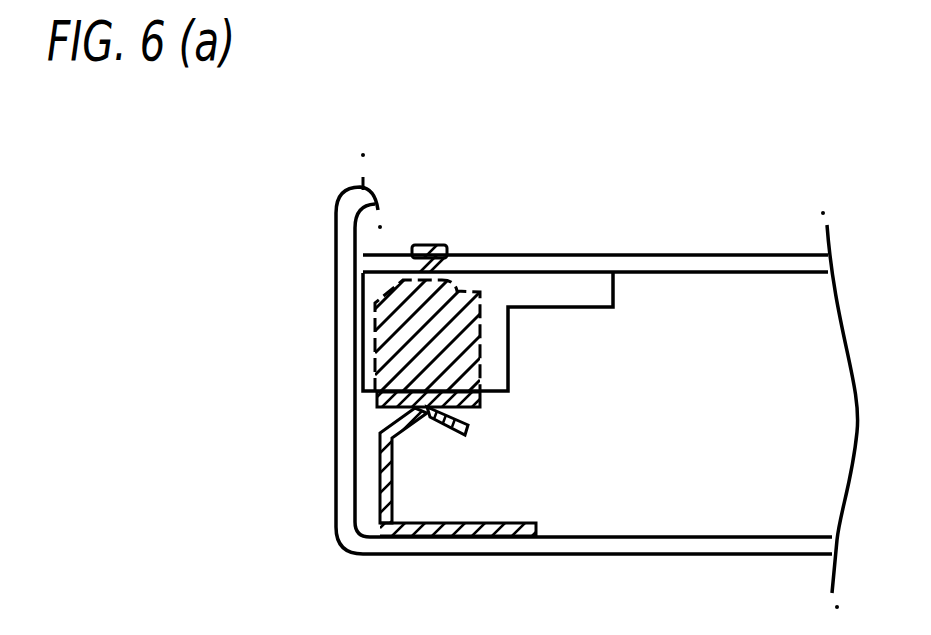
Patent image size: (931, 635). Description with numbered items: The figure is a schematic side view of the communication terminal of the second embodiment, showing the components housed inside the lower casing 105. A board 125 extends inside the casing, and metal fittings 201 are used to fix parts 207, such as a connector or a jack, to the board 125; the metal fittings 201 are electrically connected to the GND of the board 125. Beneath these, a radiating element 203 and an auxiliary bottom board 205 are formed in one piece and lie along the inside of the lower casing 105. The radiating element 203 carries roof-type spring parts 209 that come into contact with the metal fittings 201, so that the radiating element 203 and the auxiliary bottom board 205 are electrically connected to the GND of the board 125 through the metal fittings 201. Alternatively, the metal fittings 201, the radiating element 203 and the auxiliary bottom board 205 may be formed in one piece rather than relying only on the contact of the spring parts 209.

The lower casing 105 is at (335, 257).
The board 125 is at (680, 255).
The metal fittings 201 is at (437, 247).
The radiating element 203 is at (382, 472).
The auxiliary bottom board 205 is at (467, 540).
The parts 207 is at (569, 290).
The roof-type spring parts 209 is at (470, 426).